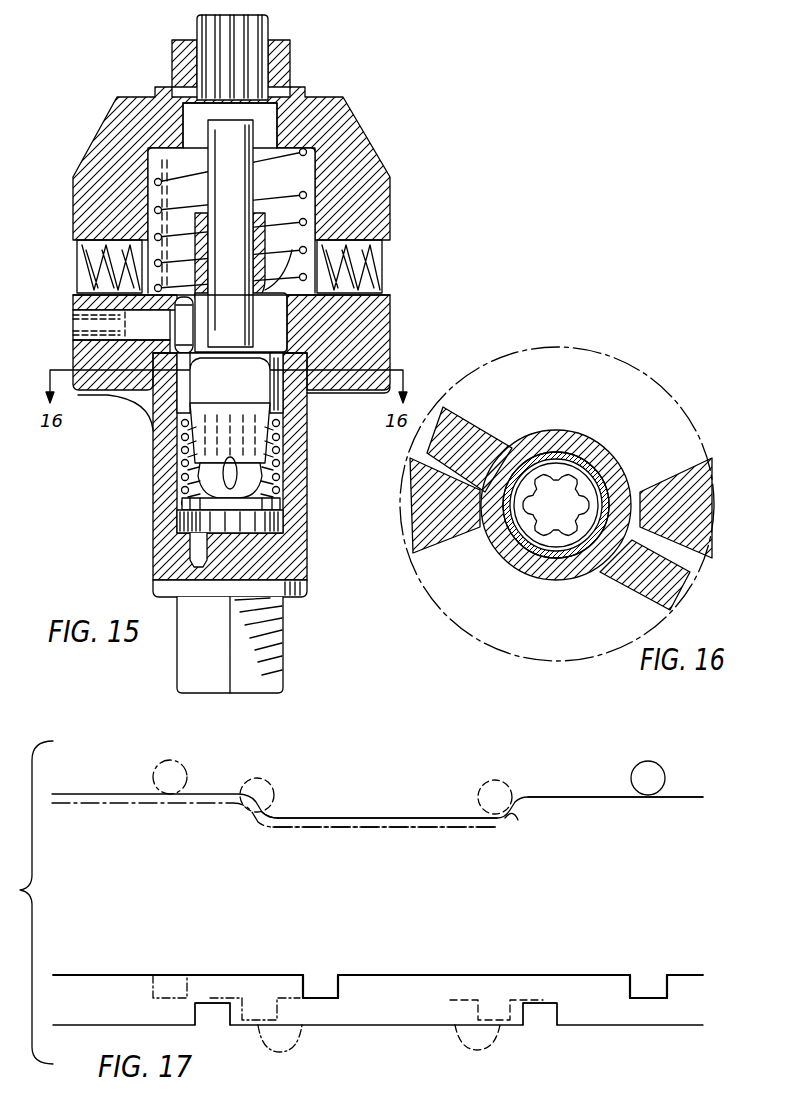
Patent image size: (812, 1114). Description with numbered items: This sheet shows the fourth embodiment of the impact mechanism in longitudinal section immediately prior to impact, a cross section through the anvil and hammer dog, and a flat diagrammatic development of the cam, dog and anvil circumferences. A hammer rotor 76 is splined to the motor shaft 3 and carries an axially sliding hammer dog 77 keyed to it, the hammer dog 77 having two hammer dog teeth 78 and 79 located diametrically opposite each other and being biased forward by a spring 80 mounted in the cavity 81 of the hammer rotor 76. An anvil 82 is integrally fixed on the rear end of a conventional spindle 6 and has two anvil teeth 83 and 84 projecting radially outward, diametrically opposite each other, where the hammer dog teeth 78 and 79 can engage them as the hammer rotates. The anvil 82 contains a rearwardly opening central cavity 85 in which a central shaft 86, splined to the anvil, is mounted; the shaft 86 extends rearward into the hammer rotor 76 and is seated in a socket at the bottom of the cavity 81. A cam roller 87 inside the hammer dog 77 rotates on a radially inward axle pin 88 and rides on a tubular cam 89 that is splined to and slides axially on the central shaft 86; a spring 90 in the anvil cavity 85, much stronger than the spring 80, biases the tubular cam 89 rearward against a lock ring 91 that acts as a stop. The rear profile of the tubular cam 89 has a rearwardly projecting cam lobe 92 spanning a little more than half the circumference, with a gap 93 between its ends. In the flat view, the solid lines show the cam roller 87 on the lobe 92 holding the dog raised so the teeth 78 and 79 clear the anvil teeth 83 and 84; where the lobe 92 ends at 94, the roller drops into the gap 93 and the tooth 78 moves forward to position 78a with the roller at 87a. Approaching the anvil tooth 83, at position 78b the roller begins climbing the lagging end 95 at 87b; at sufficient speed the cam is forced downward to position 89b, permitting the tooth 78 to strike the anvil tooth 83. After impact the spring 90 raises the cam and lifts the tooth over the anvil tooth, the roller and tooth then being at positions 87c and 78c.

In FIG. 15, the motor shaft 3 is at (256, 28).
In FIG. 15, the spindle 6 is at (268, 583).
In FIG. 15, the hammer rotor 76 is at (345, 126).
In FIG. 15, the hammer dog 77 is at (378, 311).
In FIG. 17, the hammer dog 77 is at (573, 980).
In FIG. 15, the hammer dog tooth 78 is at (86, 358).
In FIG. 16, the hammer dog tooth 78 is at (440, 531).
In FIG. 17, the hammer dog tooth 78 is at (662, 986).
In FIG. 17, the forward position of hammer dog tooth 78a is at (489, 1025).
In FIG. 17, the pre-engagement position of hammer dog tooth 78b is at (266, 1025).
In FIG. 17, the post-pass position of hammer dog tooth 78c is at (153, 998).
In FIG. 15, the hammer dog tooth 79 is at (372, 356).
In FIG. 16, the hammer dog tooth 79 is at (681, 481).
In FIG. 17, the hammer dog tooth 79 is at (337, 998).
In FIG. 15, the spring 80 is at (290, 256).
In FIG. 15, the cavity 81 is at (296, 187).
In FIG. 15, the anvil 82 is at (297, 443).
In FIG. 16, the anvil 82 is at (575, 438).
In FIG. 17, the anvil 82 is at (382, 1026).
In FIG. 15, the anvil tooth 83 is at (121, 399).
In FIG. 16, the anvil tooth 83 is at (460, 413).
In FIG. 17, the anvil tooth 83 is at (222, 1023).
In FIG. 16, the anvil tooth 84 is at (648, 588).
In FIG. 17, the anvil tooth 84 is at (550, 1023).
In FIG. 15, the anvil cavity 85 is at (280, 479).
In FIG. 15, the central shaft 86 is at (238, 278).
In FIG. 15, the cam roller 87 is at (185, 323).
In FIG. 17, the cam roller 87 is at (665, 777).
In FIG. 17, the cam roller position 87a is at (508, 783).
In FIG. 17, the cam roller position 87b is at (272, 810).
In FIG. 17, the cam roller position 87c is at (190, 765).
In FIG. 15, the axle pin 88 is at (112, 321).
In FIG. 15, the tubular cam 89 is at (270, 398).
In FIG. 16, the tubular cam 89 is at (512, 529).
In FIG. 17, the tubular cam 89 is at (57, 794).
In FIG. 17, the depressed position of tubular cam 89b is at (338, 828).
In FIG. 15, the spring 90 is at (182, 472).
In FIG. 15, the lock ring 91 is at (216, 365).
In FIG. 16, the lock ring 91 is at (526, 523).
In FIG. 17, the cam lobe 92 is at (586, 797).
In FIG. 17, the cam gap 93 is at (393, 818).
In FIG. 17, the end of cam lobe 94 is at (508, 816).
In FIG. 17, the lagging end of cam lobe 95 is at (262, 800).